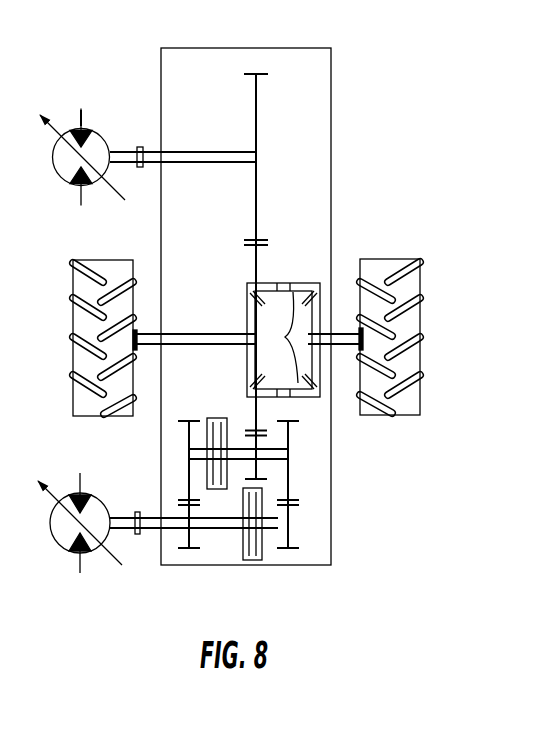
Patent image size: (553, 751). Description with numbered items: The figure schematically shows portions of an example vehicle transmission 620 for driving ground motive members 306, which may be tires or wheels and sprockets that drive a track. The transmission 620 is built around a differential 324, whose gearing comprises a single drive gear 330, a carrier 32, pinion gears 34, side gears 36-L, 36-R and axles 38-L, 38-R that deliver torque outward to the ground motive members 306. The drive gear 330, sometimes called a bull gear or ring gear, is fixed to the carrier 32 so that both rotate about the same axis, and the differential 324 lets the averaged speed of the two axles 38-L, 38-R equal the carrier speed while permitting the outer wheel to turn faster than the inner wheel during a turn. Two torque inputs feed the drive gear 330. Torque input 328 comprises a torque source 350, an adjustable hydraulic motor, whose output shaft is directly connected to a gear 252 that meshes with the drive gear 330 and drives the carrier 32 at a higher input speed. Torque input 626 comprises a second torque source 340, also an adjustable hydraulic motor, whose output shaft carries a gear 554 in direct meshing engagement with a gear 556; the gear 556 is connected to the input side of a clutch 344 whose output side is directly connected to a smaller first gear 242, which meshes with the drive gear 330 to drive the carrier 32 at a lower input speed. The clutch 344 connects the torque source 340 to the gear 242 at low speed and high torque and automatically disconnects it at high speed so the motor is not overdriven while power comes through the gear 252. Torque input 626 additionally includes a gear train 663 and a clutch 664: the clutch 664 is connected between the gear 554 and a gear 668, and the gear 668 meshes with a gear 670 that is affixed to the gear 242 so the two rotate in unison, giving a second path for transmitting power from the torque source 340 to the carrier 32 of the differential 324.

The vehicle transmission 620 is at (54, 90).
The torque input 626 is at (192, 571).
The torque input 328 is at (97, 105).
The torque source 350 is at (57, 177).
The gear 252 is at (256, 119).
The drive gear 330 is at (254, 260).
The carrier 32 is at (273, 283).
The differential 324 is at (312, 268).
The left side gear 36-L is at (255, 318).
The right side gear 36-R is at (318, 297).
The pinion gears 34 is at (280, 337).
The left axle 38-L is at (149, 333).
The right axle 38-R is at (343, 349).
The ground motive members 306 is at (72, 323).
The first gear 242 is at (250, 438).
The gear 556 is at (189, 432).
The clutch 344 is at (205, 471).
The gear 554 is at (196, 538).
The gear 670 is at (290, 438).
The gear train 663 is at (294, 474).
The gear 668 is at (291, 538).
The clutch 664 is at (263, 553).
The torque source 340 is at (57, 545).